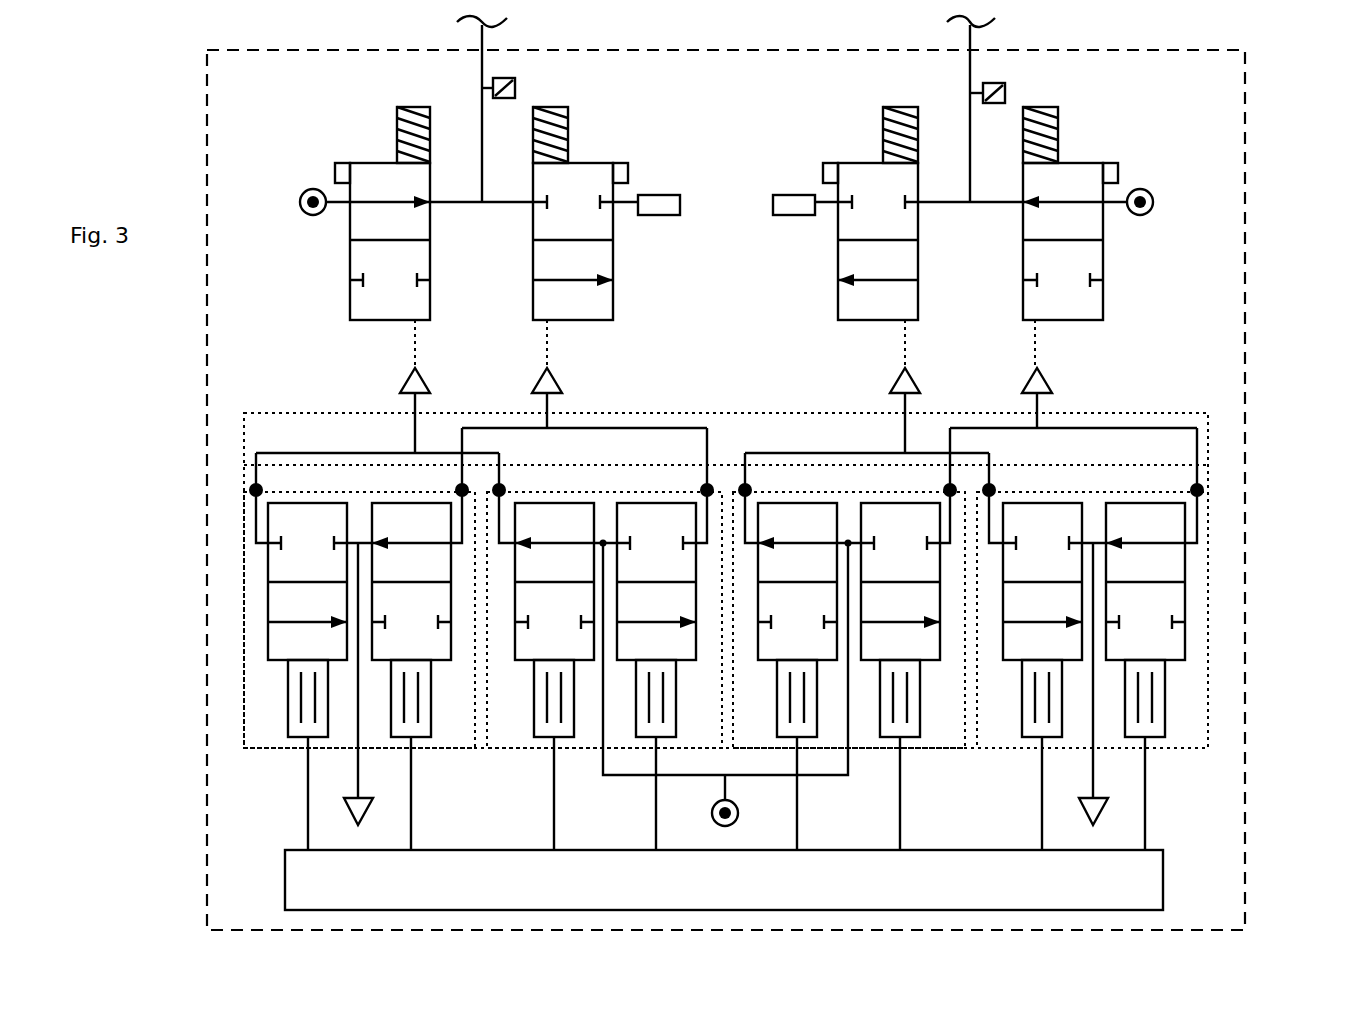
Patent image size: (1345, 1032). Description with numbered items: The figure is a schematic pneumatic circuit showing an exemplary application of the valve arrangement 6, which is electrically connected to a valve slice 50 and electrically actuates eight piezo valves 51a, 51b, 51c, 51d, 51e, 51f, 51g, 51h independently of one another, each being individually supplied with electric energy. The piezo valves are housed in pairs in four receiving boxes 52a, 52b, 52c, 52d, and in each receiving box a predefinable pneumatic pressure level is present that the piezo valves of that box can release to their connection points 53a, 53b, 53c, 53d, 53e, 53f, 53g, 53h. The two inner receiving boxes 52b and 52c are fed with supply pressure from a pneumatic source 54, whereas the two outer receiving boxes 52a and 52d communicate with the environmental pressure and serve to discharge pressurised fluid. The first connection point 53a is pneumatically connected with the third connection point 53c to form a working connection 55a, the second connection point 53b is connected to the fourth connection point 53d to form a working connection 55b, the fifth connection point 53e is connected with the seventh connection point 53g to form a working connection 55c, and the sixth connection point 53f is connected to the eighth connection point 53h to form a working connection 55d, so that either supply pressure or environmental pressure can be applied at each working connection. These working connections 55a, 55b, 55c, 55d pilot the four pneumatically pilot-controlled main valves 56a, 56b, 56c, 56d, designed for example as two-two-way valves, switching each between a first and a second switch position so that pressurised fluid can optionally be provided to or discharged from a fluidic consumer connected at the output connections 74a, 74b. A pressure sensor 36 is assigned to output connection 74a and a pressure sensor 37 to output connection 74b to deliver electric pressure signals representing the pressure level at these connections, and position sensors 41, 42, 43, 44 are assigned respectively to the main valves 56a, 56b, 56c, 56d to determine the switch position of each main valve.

The valve arrangement 6 is at (1150, 877).
The pressure sensor 36 is at (515, 90).
The pressure sensor 37 is at (1005, 95).
The position sensor 41 is at (342, 172).
The position sensor 42 is at (621, 172).
The position sensor 43 is at (830, 172).
The position sensor 44 is at (1110, 172).
The valve slice 50 is at (1245, 183).
The piezo valve 51a is at (297, 730).
The piezo valve 51b is at (424, 730).
The piezo valve 51c is at (540, 730).
The piezo valve 51d is at (642, 730).
The piezo valve 51e is at (783, 730).
The piezo valve 51f is at (913, 730).
The piezo valve 51g is at (1028, 730).
The piezo valve 51h is at (1158, 730).
The receiving box 52a is at (362, 503).
The receiving box 52b is at (603, 503).
The receiving box 52c is at (848, 503).
The receiving box 52d is at (1093, 503).
The first connection point 53a is at (257, 482).
The second connection point 53b is at (462, 482).
The third connection point 53c is at (500, 482).
The fourth connection point 53d is at (707, 482).
The fifth connection point 53e is at (746, 482).
The sixth connection point 53f is at (950, 482).
The seventh connection point 53g is at (990, 482).
The eighth connection point 53h is at (1198, 482).
The pneumatic source 54 is at (712, 812).
The working connection 55a is at (413, 451).
The working connection 55b is at (549, 427).
The working connection 55c is at (903, 451).
The working connection 55d is at (1039, 427).
The main valve 56a is at (325, 264).
The main valve 56b is at (510, 264).
The main valve 56c is at (812, 264).
The main valve 56d is at (997, 264).
The output connection 74a is at (482, 105).
The output connection 74b is at (970, 105).